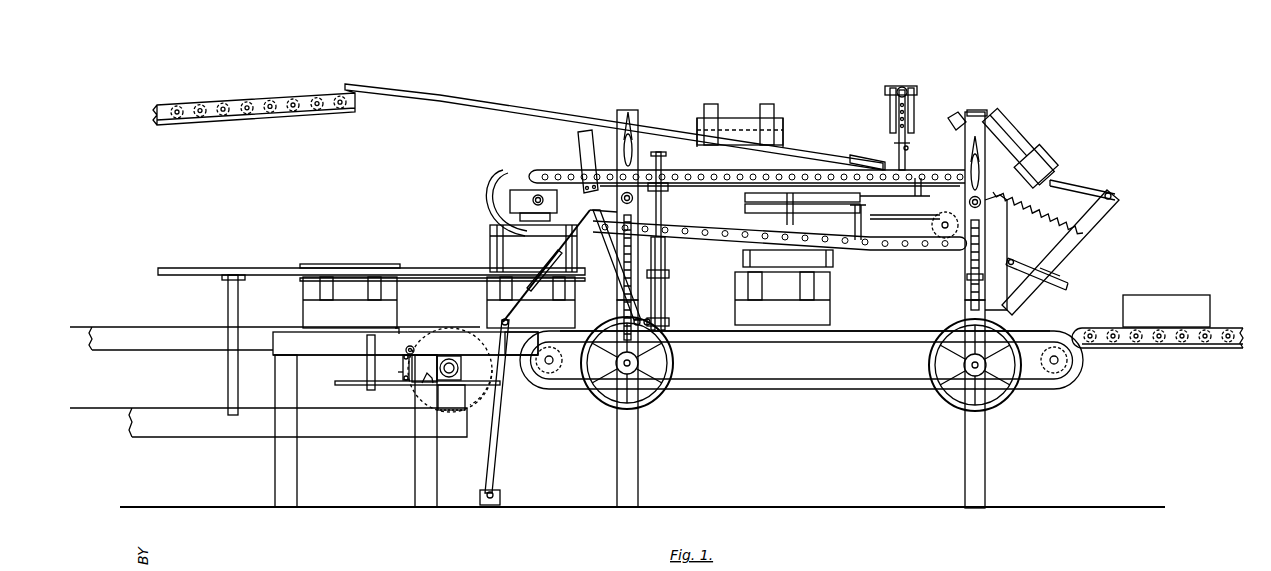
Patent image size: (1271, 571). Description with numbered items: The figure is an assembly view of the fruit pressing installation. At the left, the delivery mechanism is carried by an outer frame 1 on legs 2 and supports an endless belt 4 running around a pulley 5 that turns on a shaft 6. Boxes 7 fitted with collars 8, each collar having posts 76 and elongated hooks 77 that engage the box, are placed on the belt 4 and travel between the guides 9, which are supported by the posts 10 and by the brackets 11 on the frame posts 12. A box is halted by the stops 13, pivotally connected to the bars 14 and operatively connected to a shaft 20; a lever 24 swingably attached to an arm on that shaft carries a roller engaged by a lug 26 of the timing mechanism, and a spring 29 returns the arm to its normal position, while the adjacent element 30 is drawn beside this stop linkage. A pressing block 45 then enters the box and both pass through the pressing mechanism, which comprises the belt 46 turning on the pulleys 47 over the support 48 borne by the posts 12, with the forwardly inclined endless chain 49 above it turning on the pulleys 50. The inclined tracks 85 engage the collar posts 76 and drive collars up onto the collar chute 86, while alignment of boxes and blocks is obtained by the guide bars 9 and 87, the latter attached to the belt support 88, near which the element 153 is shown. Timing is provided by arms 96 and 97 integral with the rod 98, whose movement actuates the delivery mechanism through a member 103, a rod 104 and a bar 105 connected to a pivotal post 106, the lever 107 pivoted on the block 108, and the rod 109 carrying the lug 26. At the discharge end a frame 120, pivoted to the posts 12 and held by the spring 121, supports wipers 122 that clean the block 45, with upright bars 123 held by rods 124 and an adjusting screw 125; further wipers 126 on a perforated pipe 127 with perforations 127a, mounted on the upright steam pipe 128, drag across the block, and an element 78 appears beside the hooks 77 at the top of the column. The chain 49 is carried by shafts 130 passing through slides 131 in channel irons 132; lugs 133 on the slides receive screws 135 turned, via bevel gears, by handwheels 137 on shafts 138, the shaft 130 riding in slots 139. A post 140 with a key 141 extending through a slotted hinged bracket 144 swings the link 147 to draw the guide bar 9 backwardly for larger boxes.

The outer frame 1 is at (323, 356).
The legs 2 is at (297, 481).
The endless belt 4 is at (76, 327).
The pulley 5 is at (466, 405).
The shaft 6 is at (461, 368).
The box 7 is at (1172, 286).
The collar 8 is at (350, 264).
The guide 9 is at (233, 267).
The post 10 is at (240, 316).
The bracket 11 is at (612, 300).
The frame post 12 is at (638, 452).
The stop 13 is at (400, 332).
The bar 14 is at (405, 343).
The shaft 20 is at (406, 350).
The lever 24 is at (402, 369).
The lug 26 is at (421, 384).
The spring 29 is at (424, 353).
The gear segment 30 is at (480, 398).
The pressing member or block 45 is at (490, 250).
The belt 46 is at (890, 330).
The pulley 47 is at (552, 374).
The support 48 is at (801, 360).
The endless chain 49 is at (920, 170).
The pulley 50 is at (945, 216).
The post 76 is at (765, 300).
The elongated hook 77 is at (698, 115).
The hook 78 is at (955, 114).
The track 85 is at (518, 104).
The inclined collar chute 86 is at (312, 112).
The guide bar 87 is at (499, 184).
The belt support 88 is at (747, 188).
The arm 96 is at (922, 191).
The arm 97 is at (796, 219).
The rod 98 is at (905, 224).
The member 103 is at (861, 227).
The rod 104 is at (712, 228).
The bar 105 is at (520, 301).
The pivotal post 106 is at (540, 346).
The lever 107 is at (498, 457).
The block 108 is at (500, 498).
The rod 109 is at (350, 386).
The frame 120 is at (1100, 225).
The spring 121 is at (1061, 222).
The wiper 122 is at (1066, 183).
The upright bar 123 is at (1008, 250).
The rod 124 is at (1020, 266).
The adjusting screw 125 is at (1069, 273).
The wiper 126 is at (890, 115).
The pipe 127 is at (905, 88).
The perforation 127a is at (914, 112).
The upright pipe 128 is at (896, 146).
The shaft 130 is at (621, 199).
The slide 131 is at (981, 170).
The channel iron 132 is at (619, 112).
The apertured spaced lug 133 is at (967, 279).
The screw 135 is at (969, 258).
The handwheel 137 is at (663, 393).
The shaft 138 is at (968, 365).
The slot 139 is at (634, 140).
The post 140 is at (669, 321).
The key 141 is at (667, 300).
The slotted hinged bracket 144 is at (662, 240).
The link 147 is at (670, 275).
The bracket 153 is at (578, 134).